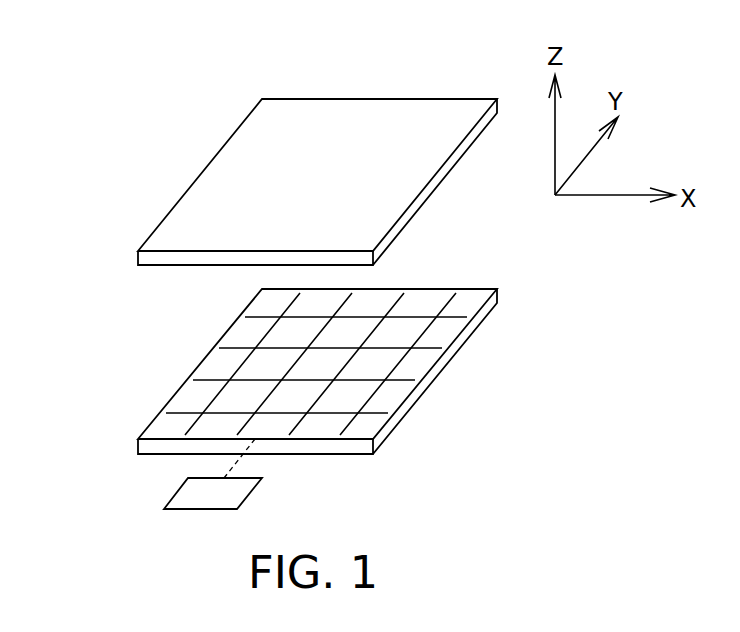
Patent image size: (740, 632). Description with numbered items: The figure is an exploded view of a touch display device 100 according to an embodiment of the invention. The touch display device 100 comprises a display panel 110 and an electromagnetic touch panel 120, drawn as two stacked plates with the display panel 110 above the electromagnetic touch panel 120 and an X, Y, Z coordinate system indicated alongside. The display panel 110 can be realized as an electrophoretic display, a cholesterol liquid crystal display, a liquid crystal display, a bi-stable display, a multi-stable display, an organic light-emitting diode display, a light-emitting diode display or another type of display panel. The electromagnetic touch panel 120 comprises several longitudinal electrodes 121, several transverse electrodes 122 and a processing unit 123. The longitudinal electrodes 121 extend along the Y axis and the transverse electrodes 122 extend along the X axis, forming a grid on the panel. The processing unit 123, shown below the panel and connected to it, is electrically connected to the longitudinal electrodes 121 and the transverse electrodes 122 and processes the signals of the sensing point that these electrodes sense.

The touch display device 100 is at (134, 52).
The display panel 110 is at (446, 170).
The electromagnetic touch panel 120 is at (340, 371).
The longitudinal electrodes 121 is at (397, 363).
The transverse electrodes 122 is at (373, 415).
The processing unit 123 is at (248, 495).